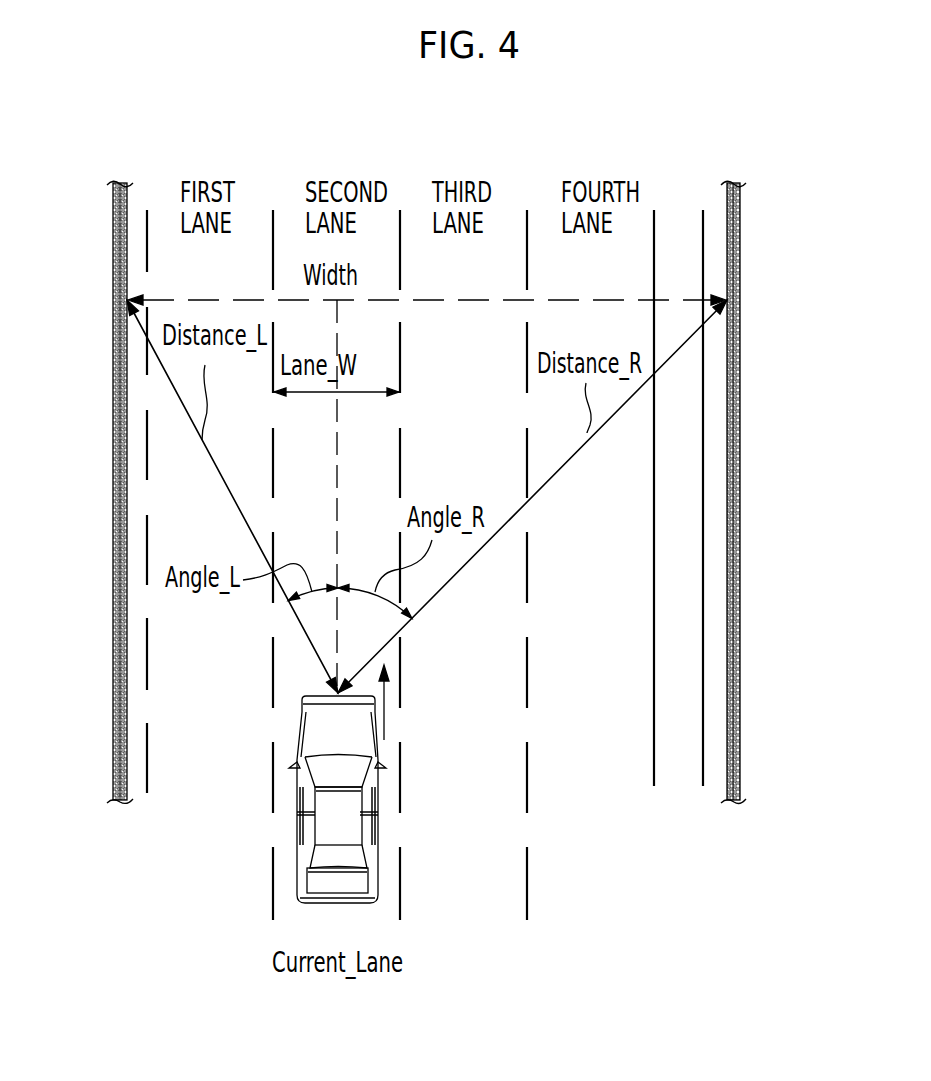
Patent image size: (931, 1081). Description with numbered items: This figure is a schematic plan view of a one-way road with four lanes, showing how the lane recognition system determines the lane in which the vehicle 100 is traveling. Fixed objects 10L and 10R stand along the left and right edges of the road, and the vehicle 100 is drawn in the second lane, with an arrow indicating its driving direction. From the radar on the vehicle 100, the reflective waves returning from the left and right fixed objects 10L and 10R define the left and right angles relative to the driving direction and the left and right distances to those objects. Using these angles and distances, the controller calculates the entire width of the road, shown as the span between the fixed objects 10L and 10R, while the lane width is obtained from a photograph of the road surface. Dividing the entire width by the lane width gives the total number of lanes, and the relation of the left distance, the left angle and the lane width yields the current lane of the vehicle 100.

The left fixed object 10L is at (113, 260).
The right fixed object 10R is at (741, 277).
The vehicle 100 is at (347, 830).